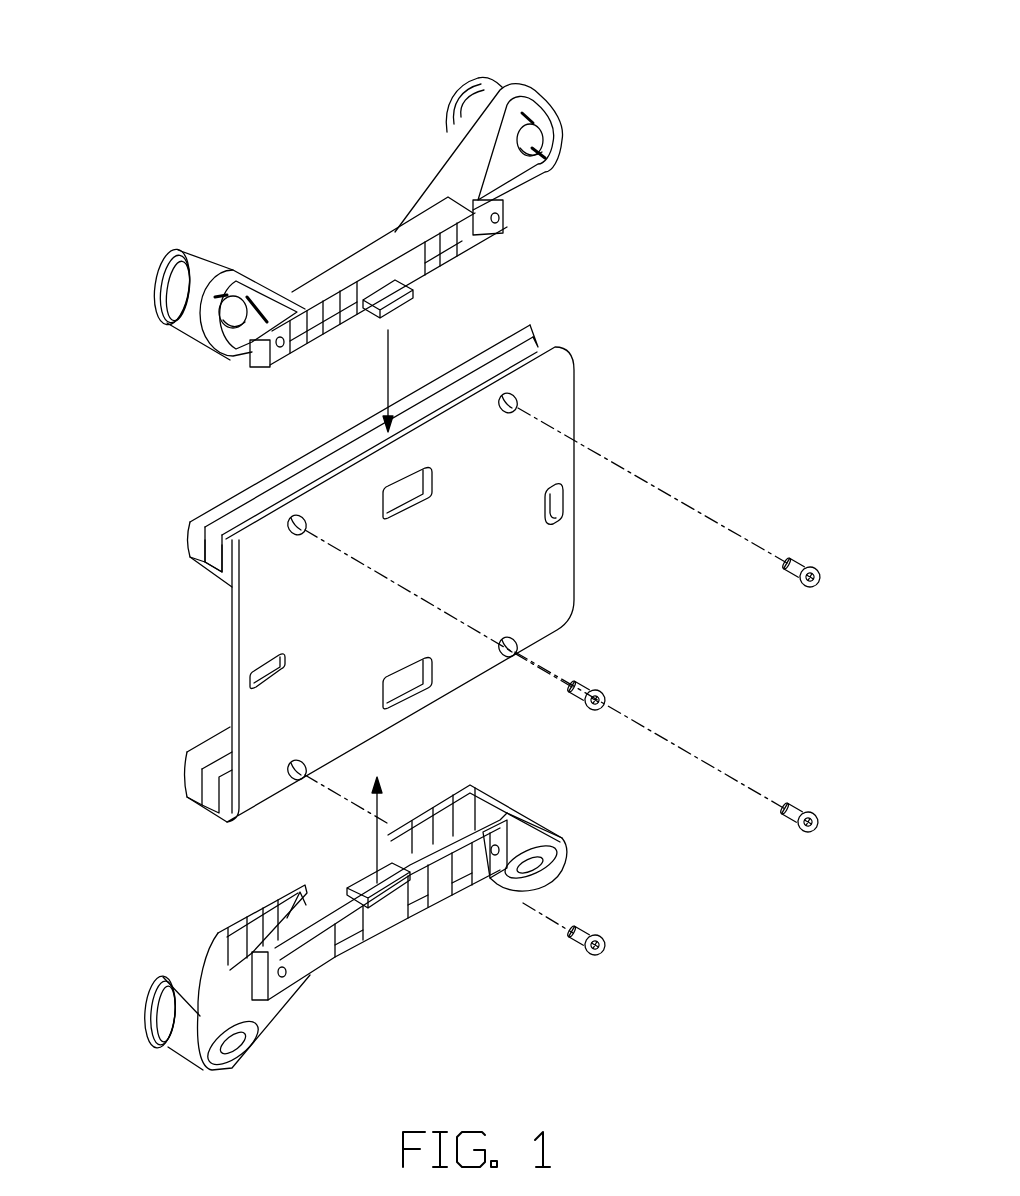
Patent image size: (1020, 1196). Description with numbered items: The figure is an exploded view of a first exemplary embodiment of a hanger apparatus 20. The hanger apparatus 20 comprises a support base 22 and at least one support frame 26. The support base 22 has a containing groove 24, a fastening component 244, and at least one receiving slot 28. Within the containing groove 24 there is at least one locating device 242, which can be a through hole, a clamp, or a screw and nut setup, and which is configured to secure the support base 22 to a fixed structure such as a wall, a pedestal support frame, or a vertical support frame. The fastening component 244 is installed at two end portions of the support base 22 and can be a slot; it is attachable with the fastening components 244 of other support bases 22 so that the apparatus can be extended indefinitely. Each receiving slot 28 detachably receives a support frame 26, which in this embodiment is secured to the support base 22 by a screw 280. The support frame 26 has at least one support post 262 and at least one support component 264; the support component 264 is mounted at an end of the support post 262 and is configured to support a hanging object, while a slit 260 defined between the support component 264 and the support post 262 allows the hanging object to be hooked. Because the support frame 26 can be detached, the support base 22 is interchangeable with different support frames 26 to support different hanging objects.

The hanger apparatus 20 is at (462, 36).
The support base 22 is at (587, 550).
The containing groove 24 is at (232, 640).
The locating device 242 is at (250, 678).
The fastening component 244 is at (208, 537).
The support frame 26 is at (374, 234).
The slit 260 is at (157, 288).
The support post 262 is at (250, 273).
The support component 264 is at (160, 258).
The receiving slot 28 is at (293, 480).
The screw 280 is at (793, 807).